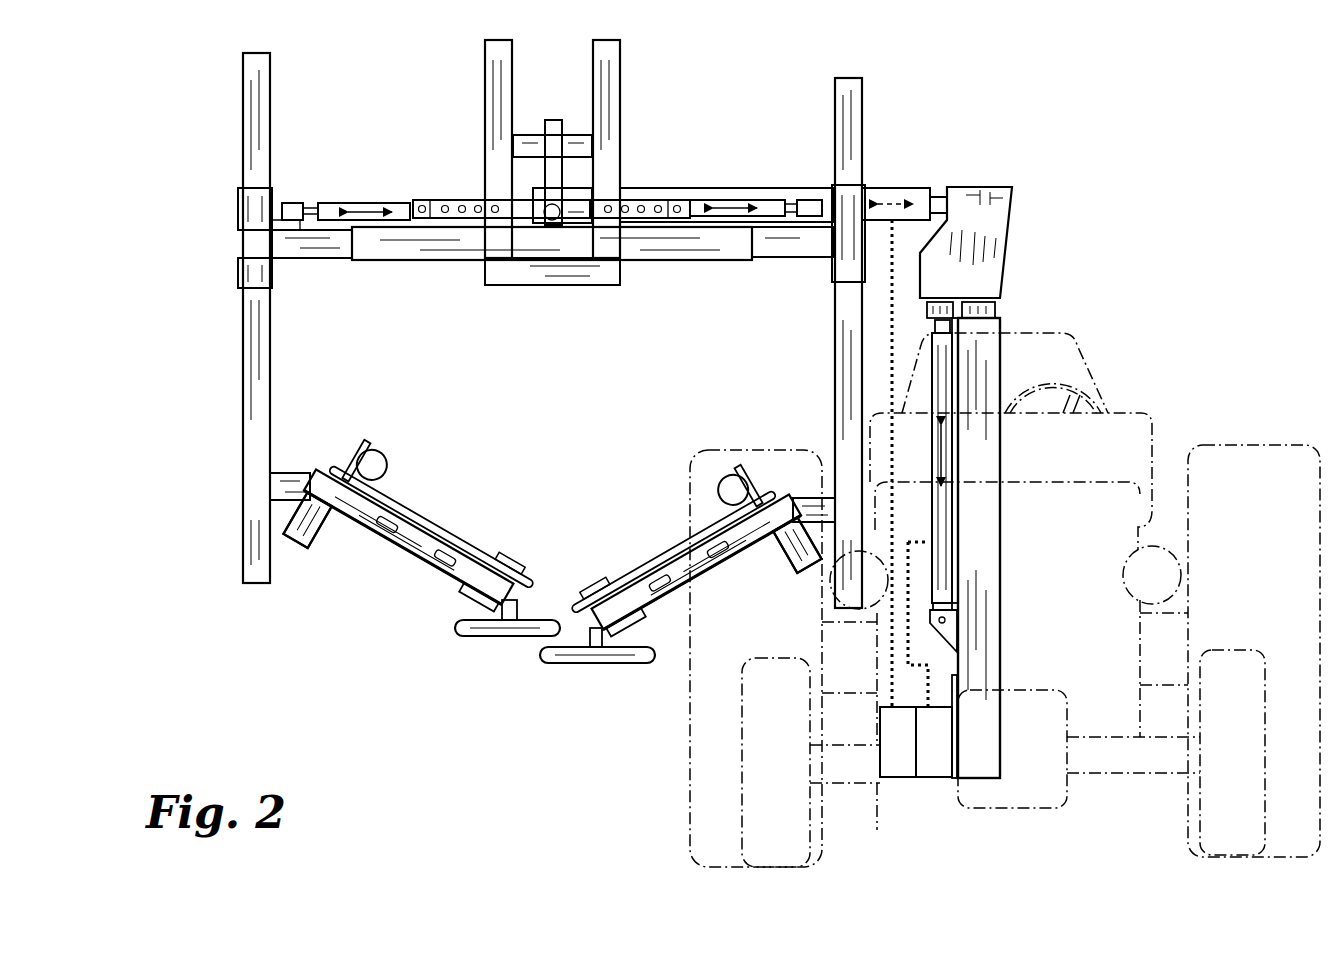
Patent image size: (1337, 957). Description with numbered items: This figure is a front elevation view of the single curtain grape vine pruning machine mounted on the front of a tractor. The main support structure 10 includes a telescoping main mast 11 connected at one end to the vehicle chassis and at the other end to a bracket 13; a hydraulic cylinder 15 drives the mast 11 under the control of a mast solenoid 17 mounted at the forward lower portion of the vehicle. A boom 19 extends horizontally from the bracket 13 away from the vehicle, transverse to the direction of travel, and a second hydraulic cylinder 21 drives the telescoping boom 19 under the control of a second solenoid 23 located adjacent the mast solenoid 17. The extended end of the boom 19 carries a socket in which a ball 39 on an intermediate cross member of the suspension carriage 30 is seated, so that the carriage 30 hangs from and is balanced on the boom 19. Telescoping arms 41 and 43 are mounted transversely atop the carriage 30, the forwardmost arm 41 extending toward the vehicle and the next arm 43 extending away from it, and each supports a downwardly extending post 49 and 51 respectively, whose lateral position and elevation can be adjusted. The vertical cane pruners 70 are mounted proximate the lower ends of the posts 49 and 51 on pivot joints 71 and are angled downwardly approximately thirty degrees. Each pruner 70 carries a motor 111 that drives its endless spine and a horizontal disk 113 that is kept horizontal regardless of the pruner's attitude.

The main support structure 10 is at (1082, 232).
The telescoping main mast 11 is at (985, 347).
The bracket 13 is at (998, 223).
The hydraulic cylinder 15 is at (942, 527).
The mast solenoid 17 is at (928, 777).
The boom 19 is at (702, 188).
The second hydraulic cylinder 21 is at (917, 198).
The second solenoid 23 is at (890, 777).
The suspension carriage 30 is at (414, 278).
The ball 39 is at (555, 213).
The forwardmost telescoping arm 41 is at (767, 207).
The telescoping arm 43 is at (365, 203).
The post 49 is at (848, 310).
The post 51 is at (255, 372).
The vertical cane pruner 70 is at (552, 552).
The pivot joint 71 is at (265, 488).
The motor 111 is at (318, 530).
The horizontal disk 113 is at (550, 657).